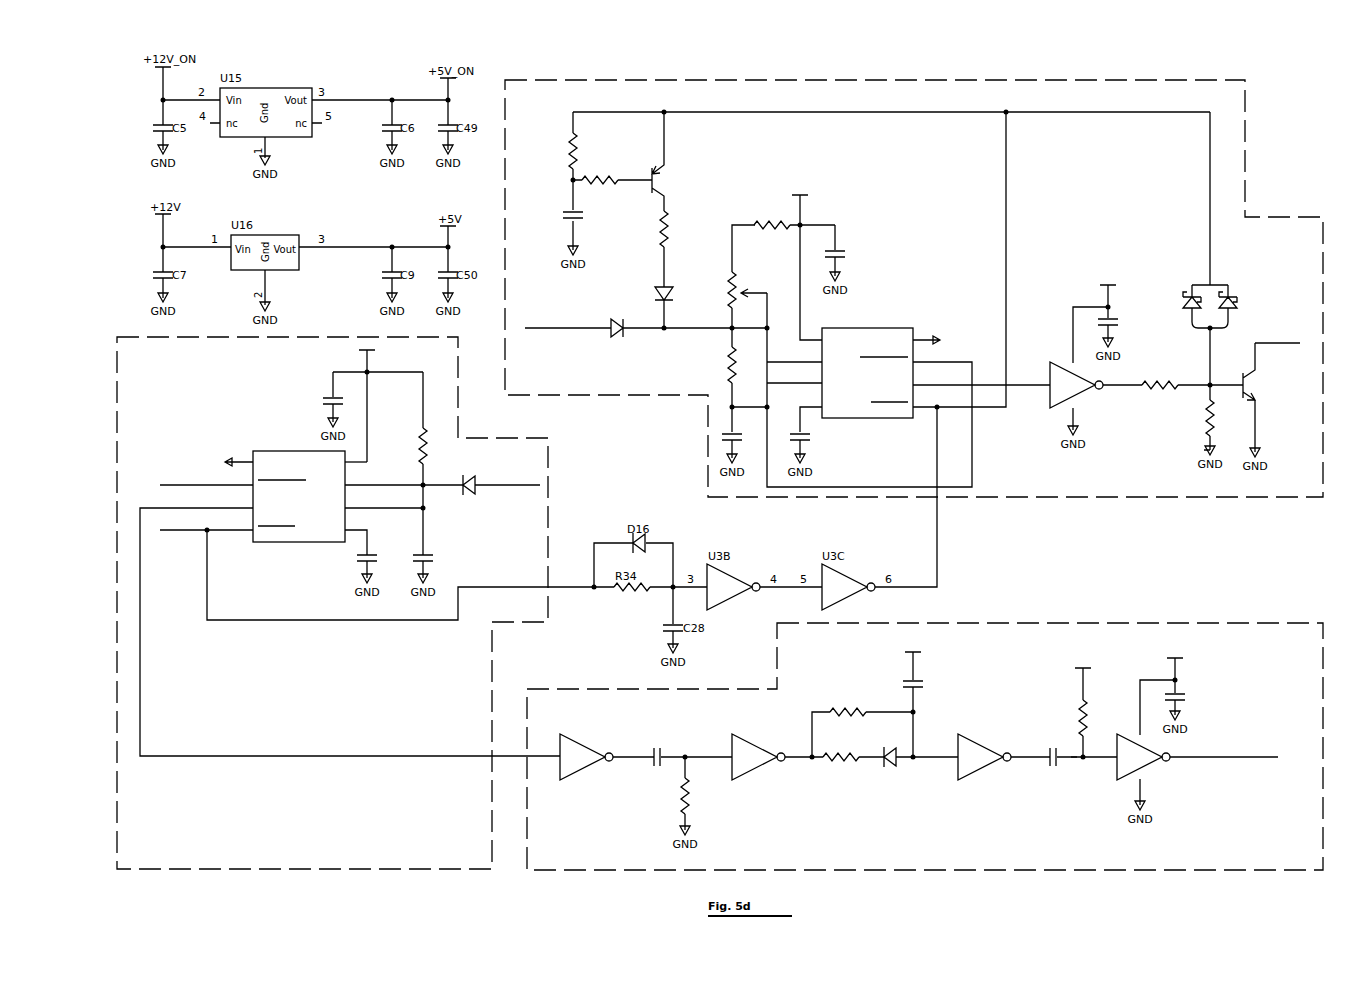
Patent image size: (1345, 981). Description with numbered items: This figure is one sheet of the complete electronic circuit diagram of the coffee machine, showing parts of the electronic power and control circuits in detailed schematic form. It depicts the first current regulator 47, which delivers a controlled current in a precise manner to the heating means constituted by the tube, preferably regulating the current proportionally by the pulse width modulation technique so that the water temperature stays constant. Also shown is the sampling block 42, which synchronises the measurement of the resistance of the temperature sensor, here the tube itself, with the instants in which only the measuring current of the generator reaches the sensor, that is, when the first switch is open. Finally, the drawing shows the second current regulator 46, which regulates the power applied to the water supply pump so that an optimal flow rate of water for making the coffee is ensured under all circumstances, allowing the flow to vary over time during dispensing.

The second current regulator 46 is at (1245, 170).
The first current regulator 47 is at (550, 520).
The sampling block 42 is at (1163, 623).